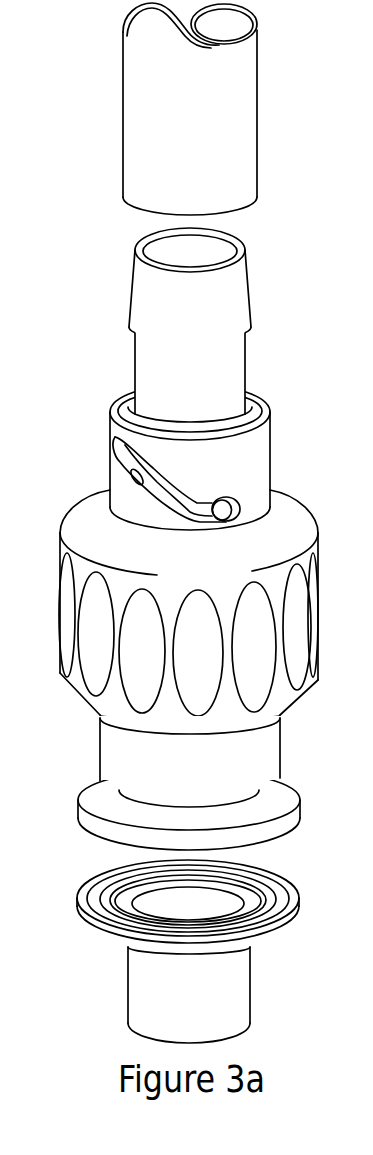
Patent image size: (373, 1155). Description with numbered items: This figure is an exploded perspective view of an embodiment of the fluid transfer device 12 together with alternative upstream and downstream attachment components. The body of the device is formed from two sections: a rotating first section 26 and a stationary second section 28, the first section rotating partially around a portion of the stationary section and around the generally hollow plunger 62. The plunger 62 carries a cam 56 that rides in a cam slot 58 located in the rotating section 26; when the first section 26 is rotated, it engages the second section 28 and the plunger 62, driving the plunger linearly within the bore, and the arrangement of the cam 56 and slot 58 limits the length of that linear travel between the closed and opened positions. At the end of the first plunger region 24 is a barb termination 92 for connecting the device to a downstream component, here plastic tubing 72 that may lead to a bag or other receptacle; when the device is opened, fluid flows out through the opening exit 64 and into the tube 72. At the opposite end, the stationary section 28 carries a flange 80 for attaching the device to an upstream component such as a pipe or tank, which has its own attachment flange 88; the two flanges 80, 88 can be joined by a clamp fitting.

The device 12 is at (104, 139).
The tubing 72 is at (204, 110).
The opening exit 64 is at (186, 252).
The plunger 62 is at (139, 263).
The barb termination 92 is at (190, 295).
The first plunger region 24 is at (113, 358).
The cam slot 58 is at (145, 477).
The cam 56 is at (250, 516).
The rotating first section 26 is at (187, 524).
The stationary second section 28 is at (197, 781).
The flange 80 is at (158, 806).
The flange 88 is at (204, 1009).